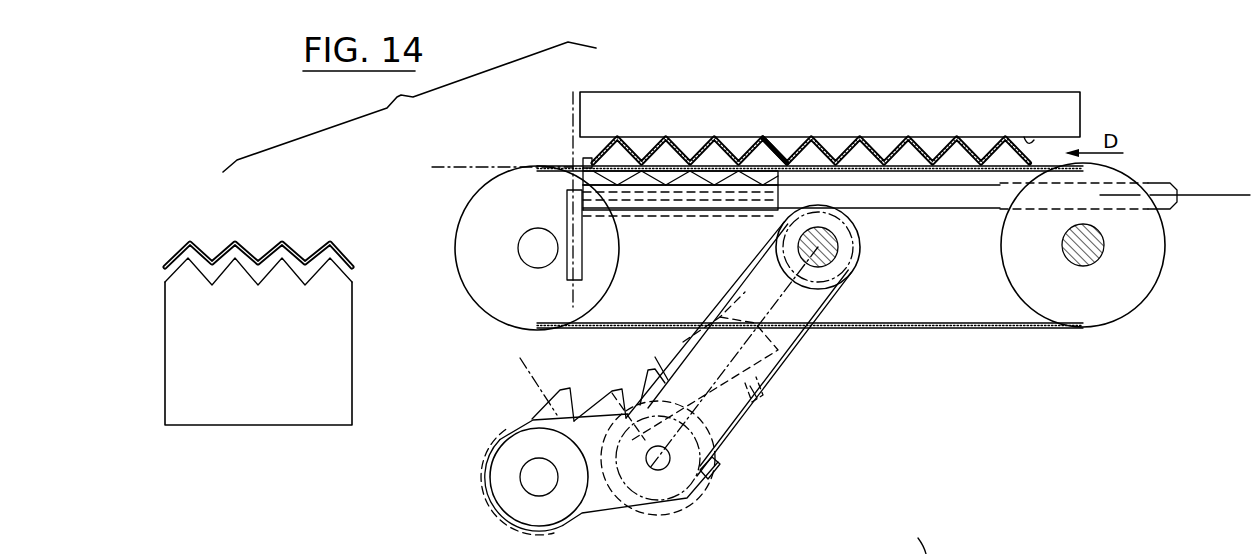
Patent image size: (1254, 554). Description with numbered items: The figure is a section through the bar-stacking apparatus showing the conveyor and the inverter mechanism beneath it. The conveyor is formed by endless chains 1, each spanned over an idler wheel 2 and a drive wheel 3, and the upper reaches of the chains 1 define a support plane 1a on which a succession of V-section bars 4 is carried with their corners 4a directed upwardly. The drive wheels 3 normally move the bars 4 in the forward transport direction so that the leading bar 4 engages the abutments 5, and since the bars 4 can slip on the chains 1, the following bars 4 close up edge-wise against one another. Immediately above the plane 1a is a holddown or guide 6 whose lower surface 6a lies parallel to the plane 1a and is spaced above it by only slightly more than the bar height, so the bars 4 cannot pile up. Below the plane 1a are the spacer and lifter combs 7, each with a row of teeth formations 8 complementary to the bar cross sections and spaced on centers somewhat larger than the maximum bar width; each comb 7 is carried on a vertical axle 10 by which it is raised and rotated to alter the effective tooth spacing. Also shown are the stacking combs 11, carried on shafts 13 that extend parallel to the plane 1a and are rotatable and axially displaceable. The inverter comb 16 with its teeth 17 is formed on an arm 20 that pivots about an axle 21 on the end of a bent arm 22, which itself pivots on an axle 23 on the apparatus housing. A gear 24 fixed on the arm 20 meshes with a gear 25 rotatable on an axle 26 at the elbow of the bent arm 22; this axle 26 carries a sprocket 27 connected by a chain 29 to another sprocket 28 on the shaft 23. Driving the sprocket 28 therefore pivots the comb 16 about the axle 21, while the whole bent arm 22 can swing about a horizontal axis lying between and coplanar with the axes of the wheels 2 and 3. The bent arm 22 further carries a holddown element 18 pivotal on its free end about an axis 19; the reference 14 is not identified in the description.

The endless chain 1 is at (968, 330).
The support plane 1a is at (500, 166).
The idler wheel 2 is at (529, 262).
The drive wheel 3 is at (1104, 245).
The V-section bar 4 is at (206, 252).
The corner of bar 4a is at (770, 147).
The abutment 5 is at (592, 162).
The holddown or guide 6 is at (885, 110).
The lower surface of guide 6a is at (1037, 138).
The spacer and lifter comb 7 is at (755, 185).
The teeth formation 8 is at (637, 168).
The vertical axle 10 is at (571, 108).
The stacking comb 11 is at (650, 206).
The shaft 13 is at (1194, 195).
The container 14 is at (172, 341).
The inverter comb 16 is at (656, 360).
The teeth of inverter comb 17 is at (645, 375).
The holddown element 18 is at (556, 395).
The axis 19 is at (520, 360).
The arm 20 is at (598, 516).
The axle 21 is at (528, 476).
The bent arm 22 is at (757, 392).
The axle 23 is at (830, 262).
The gear 24 is at (503, 522).
The gear 25 is at (656, 516).
The axle 26 is at (667, 462).
The sprocket 27 is at (703, 483).
The sprocket 28 is at (845, 243).
The chain 29 is at (797, 350).